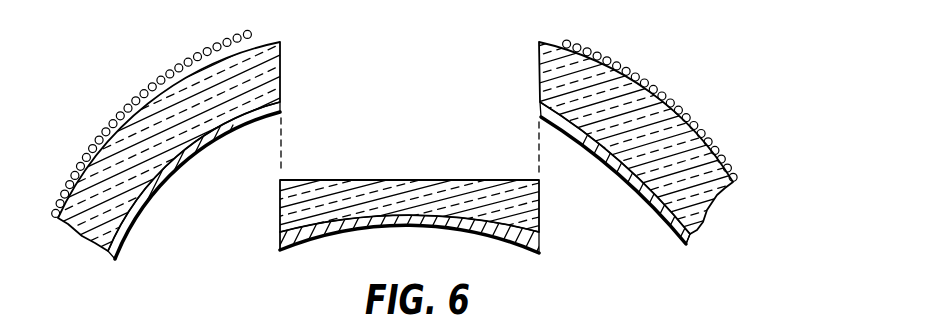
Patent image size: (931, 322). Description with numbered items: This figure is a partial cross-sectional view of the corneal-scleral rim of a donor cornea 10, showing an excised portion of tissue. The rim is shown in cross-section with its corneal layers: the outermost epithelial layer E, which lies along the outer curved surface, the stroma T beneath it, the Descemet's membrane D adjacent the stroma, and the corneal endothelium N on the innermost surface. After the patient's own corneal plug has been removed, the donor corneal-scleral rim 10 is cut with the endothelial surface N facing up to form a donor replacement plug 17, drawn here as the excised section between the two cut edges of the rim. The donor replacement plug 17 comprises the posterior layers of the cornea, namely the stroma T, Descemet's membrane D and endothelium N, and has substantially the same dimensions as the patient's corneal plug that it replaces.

The corneal-scleral rim of the donor cornea 10 is at (408, 161).
The epithelial layer E is at (703, 141).
The corneal endothelium N is at (281, 251).
The stroma T is at (281, 211).
The Descemet's membrane D is at (281, 236).
The donor replacement plug 17 is at (409, 212).